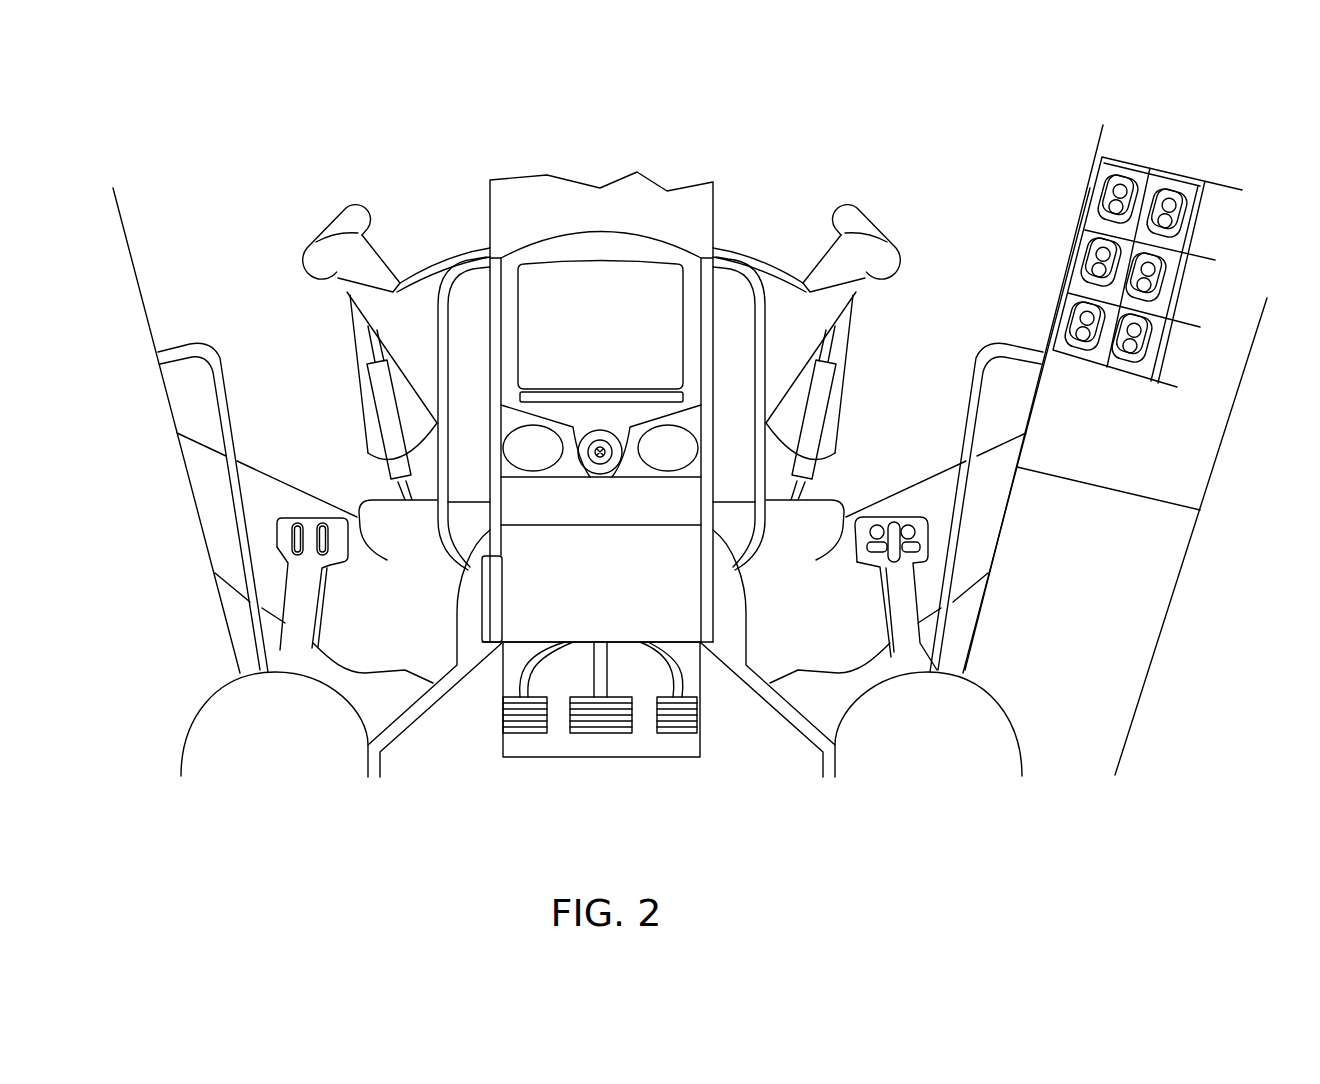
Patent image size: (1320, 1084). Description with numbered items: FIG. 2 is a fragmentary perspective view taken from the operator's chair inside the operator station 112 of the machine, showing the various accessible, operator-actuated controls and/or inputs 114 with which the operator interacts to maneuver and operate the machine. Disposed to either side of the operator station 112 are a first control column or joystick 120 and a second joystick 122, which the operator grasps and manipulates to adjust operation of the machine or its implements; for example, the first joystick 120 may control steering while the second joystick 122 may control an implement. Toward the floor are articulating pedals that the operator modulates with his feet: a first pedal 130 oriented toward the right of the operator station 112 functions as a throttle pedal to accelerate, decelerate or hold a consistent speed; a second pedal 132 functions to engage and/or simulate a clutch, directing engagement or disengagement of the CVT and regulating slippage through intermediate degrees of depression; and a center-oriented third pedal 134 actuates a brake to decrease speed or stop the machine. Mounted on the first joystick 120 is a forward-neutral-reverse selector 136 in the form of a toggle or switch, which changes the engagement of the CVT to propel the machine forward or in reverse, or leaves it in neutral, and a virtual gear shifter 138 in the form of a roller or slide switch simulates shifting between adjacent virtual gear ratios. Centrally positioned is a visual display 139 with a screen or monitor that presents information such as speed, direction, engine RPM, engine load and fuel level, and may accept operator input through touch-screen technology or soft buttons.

The operator station 112 is at (927, 257).
The controls and/or inputs 114 is at (697, 798).
The first control column or joystick 120 is at (300, 590).
The second joystick 122 is at (907, 597).
The first pedal 130 is at (673, 718).
The second pedal 132 is at (507, 713).
The third pedal 134 is at (597, 713).
The forward-neutral-reverse (F-N-R) selector 136 is at (297, 522).
The virtual gear shifter 138 is at (321, 522).
The visual display 139 is at (612, 253).